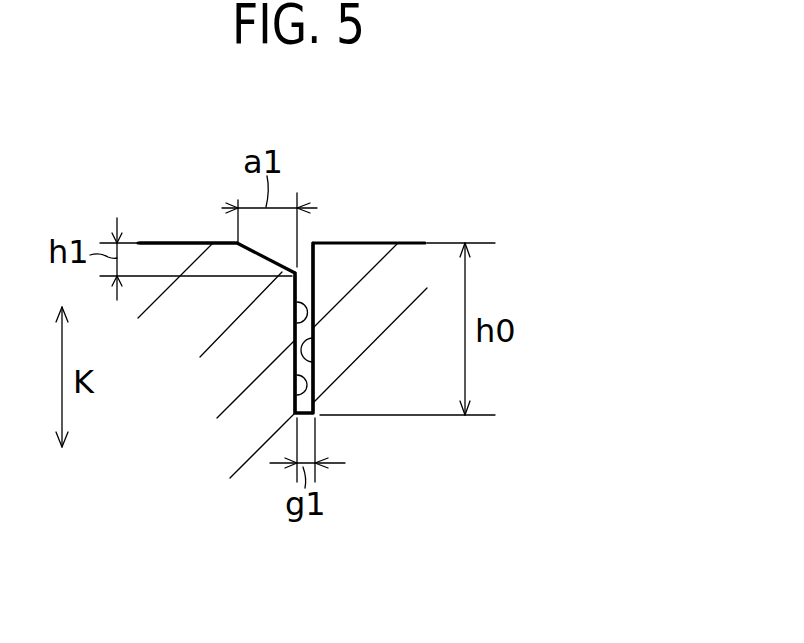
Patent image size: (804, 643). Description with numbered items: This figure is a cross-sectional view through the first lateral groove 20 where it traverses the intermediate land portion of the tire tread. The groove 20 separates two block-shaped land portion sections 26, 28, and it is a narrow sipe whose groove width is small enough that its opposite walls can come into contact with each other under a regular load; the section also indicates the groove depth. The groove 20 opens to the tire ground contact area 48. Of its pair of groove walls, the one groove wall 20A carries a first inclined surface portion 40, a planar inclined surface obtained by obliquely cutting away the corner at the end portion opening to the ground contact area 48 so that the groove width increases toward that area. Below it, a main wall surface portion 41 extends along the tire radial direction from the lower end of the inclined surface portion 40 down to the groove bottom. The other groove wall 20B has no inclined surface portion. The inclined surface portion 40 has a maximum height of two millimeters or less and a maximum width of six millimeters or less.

The first lateral groove 20 is at (305, 260).
The one groove wall 20A is at (295, 332).
The other groove wall 20B is at (313, 365).
The land portion section 26 is at (185, 242).
The land portion section 28 is at (375, 243).
The first inclined surface portion 40 is at (273, 258).
The main wall surface portion 41 is at (295, 392).
The tire ground contact area 48 is at (152, 242).